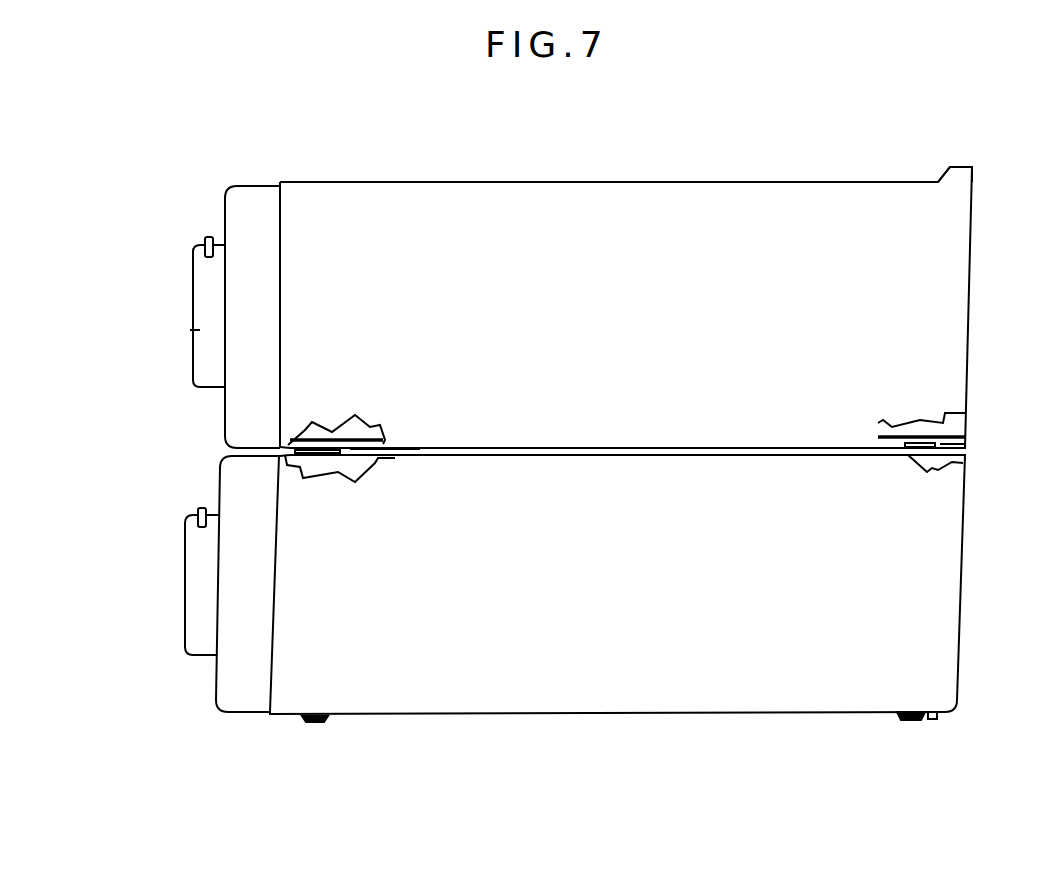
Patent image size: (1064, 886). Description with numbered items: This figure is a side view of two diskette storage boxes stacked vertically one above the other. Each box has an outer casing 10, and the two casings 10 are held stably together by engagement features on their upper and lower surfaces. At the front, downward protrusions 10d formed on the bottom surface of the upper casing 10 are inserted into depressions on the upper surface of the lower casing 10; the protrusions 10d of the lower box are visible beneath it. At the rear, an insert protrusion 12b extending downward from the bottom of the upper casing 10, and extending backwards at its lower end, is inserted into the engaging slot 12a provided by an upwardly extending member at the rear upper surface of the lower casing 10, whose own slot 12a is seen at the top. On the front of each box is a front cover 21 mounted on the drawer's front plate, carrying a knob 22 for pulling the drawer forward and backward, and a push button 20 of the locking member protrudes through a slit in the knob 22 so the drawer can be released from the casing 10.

The outer casing 10 is at (620, 179).
The downward protrusions 10d is at (278, 450).
The engaging slot 12a is at (956, 165).
The insert protrusion 12b is at (932, 719).
The push button 20 is at (207, 237).
The front cover 21 is at (256, 187).
The knob 22 is at (200, 330).